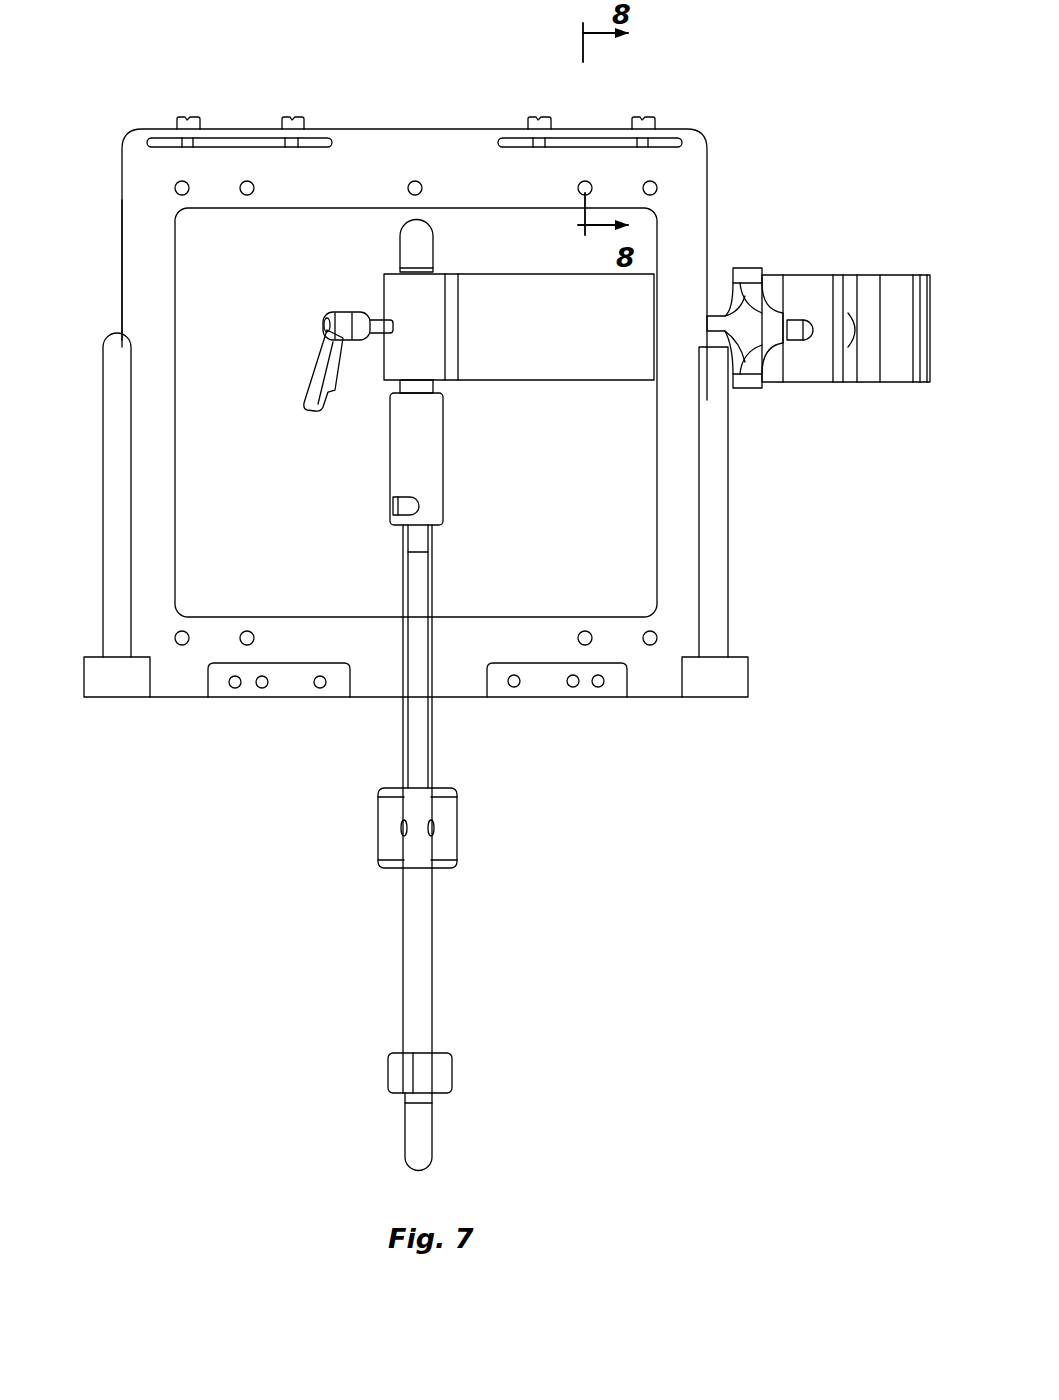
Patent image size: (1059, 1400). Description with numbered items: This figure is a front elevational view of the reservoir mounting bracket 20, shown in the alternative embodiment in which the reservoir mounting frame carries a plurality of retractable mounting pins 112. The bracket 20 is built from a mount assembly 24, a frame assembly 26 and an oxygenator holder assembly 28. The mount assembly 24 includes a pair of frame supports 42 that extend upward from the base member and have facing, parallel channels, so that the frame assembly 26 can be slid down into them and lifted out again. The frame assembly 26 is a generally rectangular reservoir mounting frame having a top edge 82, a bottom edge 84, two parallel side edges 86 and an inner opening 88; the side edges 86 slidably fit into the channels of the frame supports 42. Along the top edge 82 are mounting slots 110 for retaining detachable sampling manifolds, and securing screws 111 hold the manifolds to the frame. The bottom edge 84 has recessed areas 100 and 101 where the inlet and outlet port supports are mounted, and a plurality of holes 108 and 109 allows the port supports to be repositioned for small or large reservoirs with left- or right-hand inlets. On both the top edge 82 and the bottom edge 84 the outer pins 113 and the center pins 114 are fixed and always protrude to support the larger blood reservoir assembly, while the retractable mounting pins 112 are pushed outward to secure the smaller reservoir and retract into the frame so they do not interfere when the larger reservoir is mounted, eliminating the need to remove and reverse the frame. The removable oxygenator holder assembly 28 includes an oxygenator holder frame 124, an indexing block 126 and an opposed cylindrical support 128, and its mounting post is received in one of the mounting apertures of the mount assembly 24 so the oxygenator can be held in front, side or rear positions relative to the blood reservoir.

The reservoir mounting bracket 20 is at (720, 60).
The mount assembly 24 is at (762, 684).
The frame assembly 26 is at (468, 122).
The oxygenator holder assembly 28 is at (472, 833).
The frame supports 42 is at (112, 337).
The top edge 82 is at (380, 143).
The bottom edge 84 is at (457, 683).
The side edges 86 is at (135, 252).
The inner opening 88 is at (290, 501).
The recessed area 100 is at (297, 686).
The recessed area 101 is at (543, 684).
The holes 108 is at (262, 689).
The holes 109 is at (598, 688).
The mounting slots 110 is at (230, 143).
The securing screws 111 is at (183, 117).
The retractable mounting pins 112 is at (247, 195).
The outer pins 113 is at (174, 186).
The center pins 114 is at (414, 181).
The oxygenator holder frame 124 is at (423, 936).
The indexing block 126 is at (450, 1072).
The cylindrical support 128 is at (428, 456).